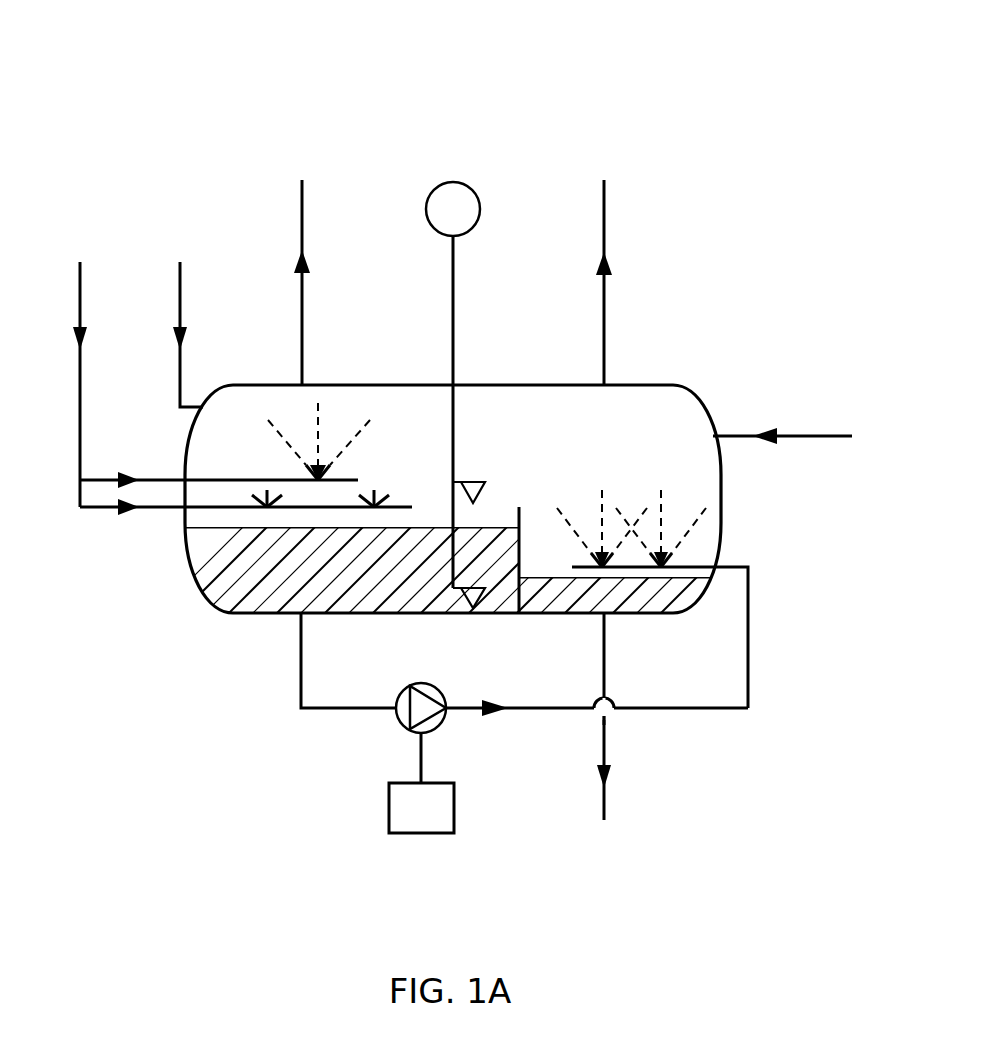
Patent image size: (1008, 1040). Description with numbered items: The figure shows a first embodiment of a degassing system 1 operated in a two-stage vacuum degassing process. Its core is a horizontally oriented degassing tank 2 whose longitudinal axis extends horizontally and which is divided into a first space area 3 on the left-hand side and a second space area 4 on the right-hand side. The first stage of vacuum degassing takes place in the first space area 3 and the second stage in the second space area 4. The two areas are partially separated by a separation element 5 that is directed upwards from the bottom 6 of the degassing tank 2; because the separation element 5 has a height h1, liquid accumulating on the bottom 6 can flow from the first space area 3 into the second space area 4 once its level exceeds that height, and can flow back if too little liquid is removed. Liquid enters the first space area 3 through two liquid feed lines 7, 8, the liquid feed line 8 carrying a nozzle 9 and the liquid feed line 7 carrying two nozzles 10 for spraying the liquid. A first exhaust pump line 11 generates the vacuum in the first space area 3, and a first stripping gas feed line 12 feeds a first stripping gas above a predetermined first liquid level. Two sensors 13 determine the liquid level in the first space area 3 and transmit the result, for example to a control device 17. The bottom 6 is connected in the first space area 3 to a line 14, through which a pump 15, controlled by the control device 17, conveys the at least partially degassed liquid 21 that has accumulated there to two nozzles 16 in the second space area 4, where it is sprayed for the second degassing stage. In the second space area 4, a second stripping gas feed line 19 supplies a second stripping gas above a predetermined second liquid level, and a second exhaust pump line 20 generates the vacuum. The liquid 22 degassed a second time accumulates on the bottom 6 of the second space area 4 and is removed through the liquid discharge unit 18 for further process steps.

The degassing system 1 is at (579, 46).
The degassing tank 2 is at (684, 382).
The first space area 3 is at (402, 412).
The second space area 4 is at (620, 410).
The separation element 5 is at (552, 475).
The bottom 6 is at (271, 614).
The liquid feed line 7 is at (91, 510).
The liquid feed line 8 is at (102, 478).
The nozzle 9 is at (318, 484).
The nozzles 10 is at (267, 512).
The first exhaust pump line 11 is at (302, 193).
The first stripping gas feed line 12 is at (180, 274).
The sensors 13 is at (485, 500).
The line 14 is at (316, 710).
The pump 15 is at (397, 724).
The nozzles 16 is at (604, 558).
The control device 17 is at (408, 824).
The liquid discharge unit 18 is at (605, 629).
The second stripping gas feed line 19 is at (834, 433).
The second exhaust pump line 20 is at (604, 193).
The at least partially degassed liquid 21 is at (431, 610).
The liquid degassed a second time 22 is at (690, 600).